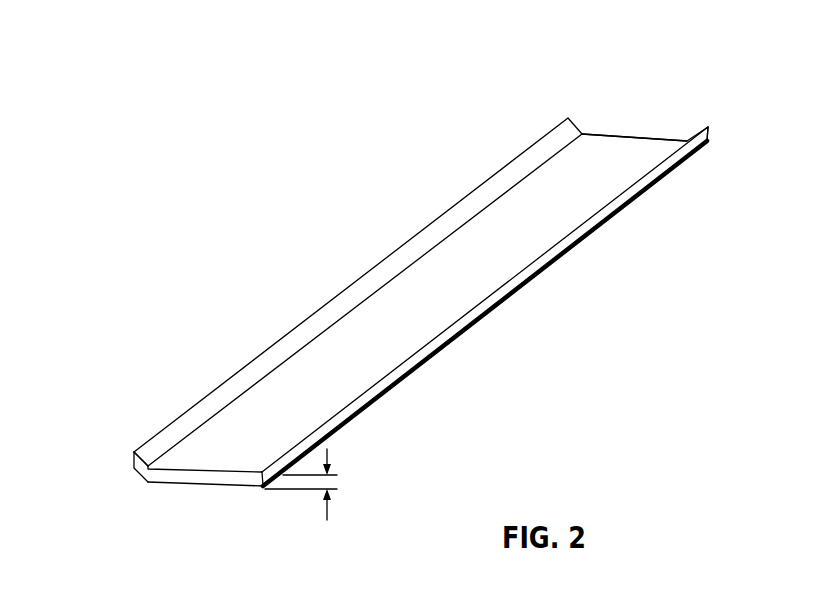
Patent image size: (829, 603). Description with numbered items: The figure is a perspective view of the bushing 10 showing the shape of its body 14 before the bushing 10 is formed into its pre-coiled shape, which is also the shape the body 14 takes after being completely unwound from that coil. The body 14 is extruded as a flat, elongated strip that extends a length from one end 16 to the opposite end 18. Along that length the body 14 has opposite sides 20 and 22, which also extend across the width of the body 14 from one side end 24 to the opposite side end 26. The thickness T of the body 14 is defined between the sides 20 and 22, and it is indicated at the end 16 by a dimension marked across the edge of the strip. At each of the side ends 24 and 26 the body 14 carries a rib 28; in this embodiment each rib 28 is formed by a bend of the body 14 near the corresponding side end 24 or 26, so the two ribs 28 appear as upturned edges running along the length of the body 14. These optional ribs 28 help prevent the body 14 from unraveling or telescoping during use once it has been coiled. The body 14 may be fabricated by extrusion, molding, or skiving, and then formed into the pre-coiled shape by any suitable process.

The bushing 10 is at (389, 283).
The body 14 is at (389, 302).
The end 16 is at (120, 475).
The end 18 is at (644, 120).
The side 20 is at (417, 303).
The side 22 is at (192, 495).
The side end 24 is at (332, 284).
The side end 26 is at (433, 351).
The rib 28 is at (137, 451).
The thickness T is at (328, 512).